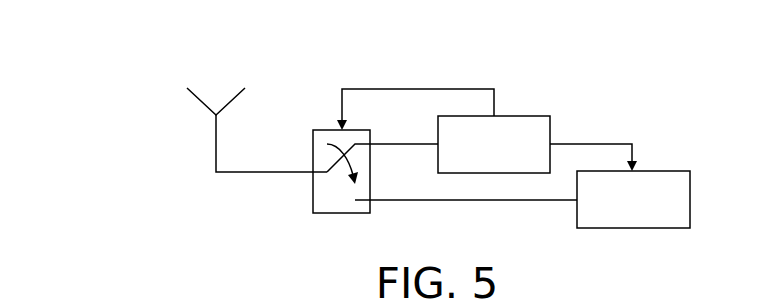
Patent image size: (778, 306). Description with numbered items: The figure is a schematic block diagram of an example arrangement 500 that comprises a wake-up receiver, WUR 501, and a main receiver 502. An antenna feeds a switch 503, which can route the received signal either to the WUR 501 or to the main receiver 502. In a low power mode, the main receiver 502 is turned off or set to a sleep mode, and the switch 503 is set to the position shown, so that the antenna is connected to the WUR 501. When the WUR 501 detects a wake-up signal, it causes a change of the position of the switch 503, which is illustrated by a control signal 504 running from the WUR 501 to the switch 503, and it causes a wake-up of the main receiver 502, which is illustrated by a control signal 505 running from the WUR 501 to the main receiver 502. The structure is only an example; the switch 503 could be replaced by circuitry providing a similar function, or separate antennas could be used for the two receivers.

The arrangement 500 is at (96, 58).
The WUR 501 is at (494, 144).
The main receiver 502 is at (633, 199).
The switch 503 is at (327, 215).
The control signal 504 is at (481, 86).
The control signal 505 is at (605, 142).